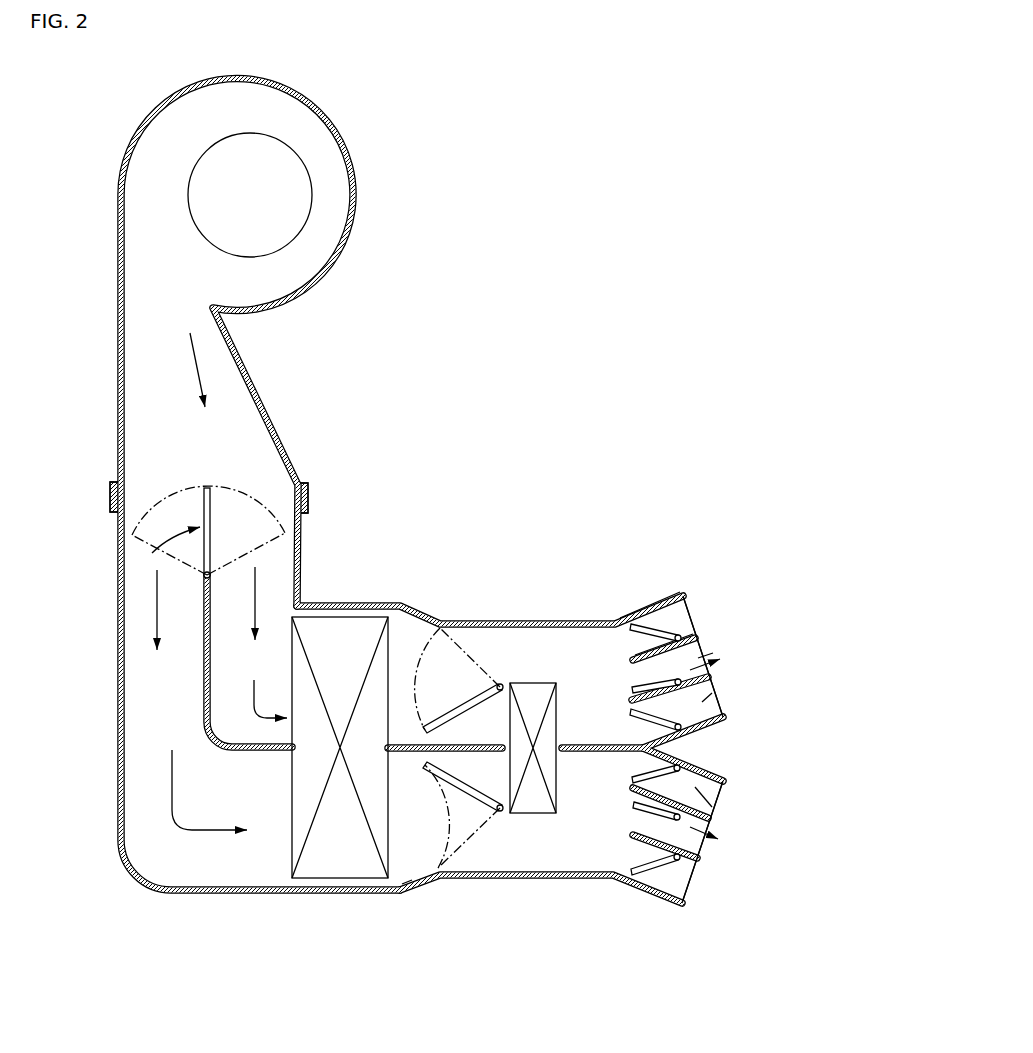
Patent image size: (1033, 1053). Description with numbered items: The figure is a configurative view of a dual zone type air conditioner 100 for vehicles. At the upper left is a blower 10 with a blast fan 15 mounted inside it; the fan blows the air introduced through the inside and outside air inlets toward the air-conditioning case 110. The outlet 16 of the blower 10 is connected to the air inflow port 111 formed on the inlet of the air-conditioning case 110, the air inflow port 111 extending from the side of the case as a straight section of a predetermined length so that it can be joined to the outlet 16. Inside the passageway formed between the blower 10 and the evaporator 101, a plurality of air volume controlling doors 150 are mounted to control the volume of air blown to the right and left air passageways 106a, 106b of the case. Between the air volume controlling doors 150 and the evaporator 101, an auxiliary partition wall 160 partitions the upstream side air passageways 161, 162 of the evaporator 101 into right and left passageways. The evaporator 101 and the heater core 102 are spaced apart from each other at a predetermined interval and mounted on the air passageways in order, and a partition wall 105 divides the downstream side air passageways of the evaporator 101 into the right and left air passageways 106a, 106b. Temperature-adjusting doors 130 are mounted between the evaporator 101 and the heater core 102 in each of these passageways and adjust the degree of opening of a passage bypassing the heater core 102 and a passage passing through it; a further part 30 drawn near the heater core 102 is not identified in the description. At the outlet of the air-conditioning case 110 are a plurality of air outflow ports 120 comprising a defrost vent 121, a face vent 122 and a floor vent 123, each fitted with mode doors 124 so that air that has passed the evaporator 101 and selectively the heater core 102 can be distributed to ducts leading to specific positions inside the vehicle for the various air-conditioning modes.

The blower 10 is at (350, 157).
The blast fan 15 is at (313, 195).
The outlet 16 is at (110, 497).
The partition plate 30 is at (598, 752).
The dual zone type air conditioner 100 is at (542, 573).
The evaporator 101 is at (334, 870).
The heater core 102 is at (532, 805).
The partition wall 105 is at (412, 880).
The right air passageway 106a is at (542, 859).
The left air passageway 106b is at (550, 664).
The air-conditioning case 110 is at (483, 620).
The air inflow port 111 is at (300, 552).
The air outflow ports 120 is at (748, 487).
The defrost vent 121 is at (665, 610).
The face vent 122 is at (700, 645).
The floor vent 123 is at (723, 700).
The mode doors 124 is at (648, 700).
The temperature-adjusting doors 130 is at (468, 710).
The air volume controlling doors 150 is at (192, 532).
The auxiliary partition wall 160 is at (203, 683).
The upstream side air passageway 161 is at (198, 614).
The upstream side air passageway 162 is at (250, 614).